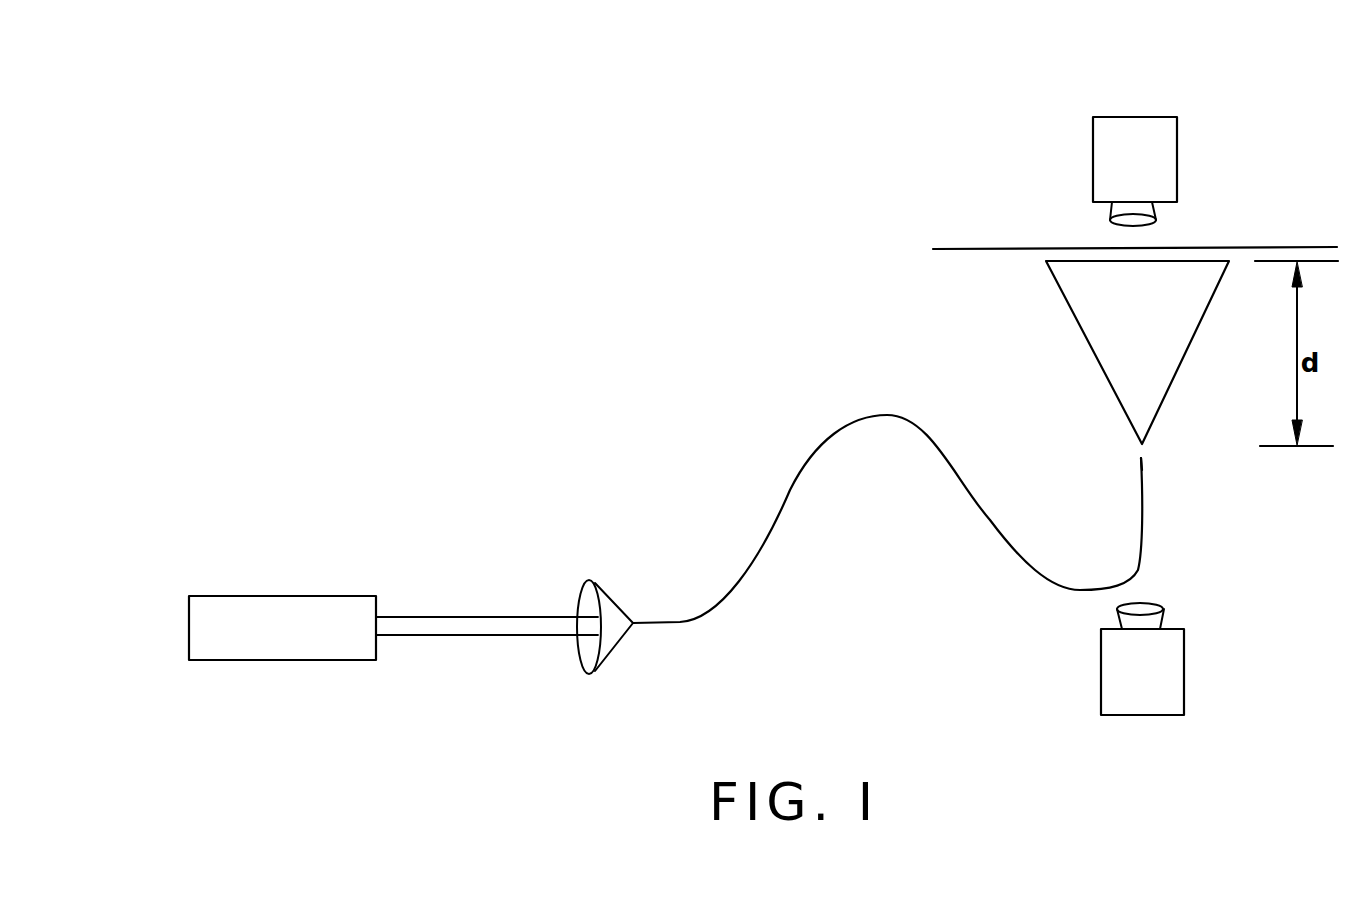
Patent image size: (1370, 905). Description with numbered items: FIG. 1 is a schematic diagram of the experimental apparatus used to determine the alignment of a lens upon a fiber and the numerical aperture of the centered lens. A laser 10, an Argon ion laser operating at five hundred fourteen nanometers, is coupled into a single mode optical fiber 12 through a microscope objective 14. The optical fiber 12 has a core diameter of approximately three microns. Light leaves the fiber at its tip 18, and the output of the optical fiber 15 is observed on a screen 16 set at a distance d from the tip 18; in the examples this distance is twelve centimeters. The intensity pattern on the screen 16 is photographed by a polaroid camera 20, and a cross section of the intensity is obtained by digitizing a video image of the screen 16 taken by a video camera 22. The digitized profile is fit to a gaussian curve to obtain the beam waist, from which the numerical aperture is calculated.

The laser 10 is at (257, 585).
The single mode optical fiber 12 is at (801, 433).
The microscope objective 14 is at (620, 655).
The output of the optical fiber 15 is at (1066, 318).
The screen 16 is at (992, 237).
The tip of the fiber 18 is at (1158, 456).
The polaroid camera 20 is at (1117, 108).
The video camera 22 is at (1142, 720).